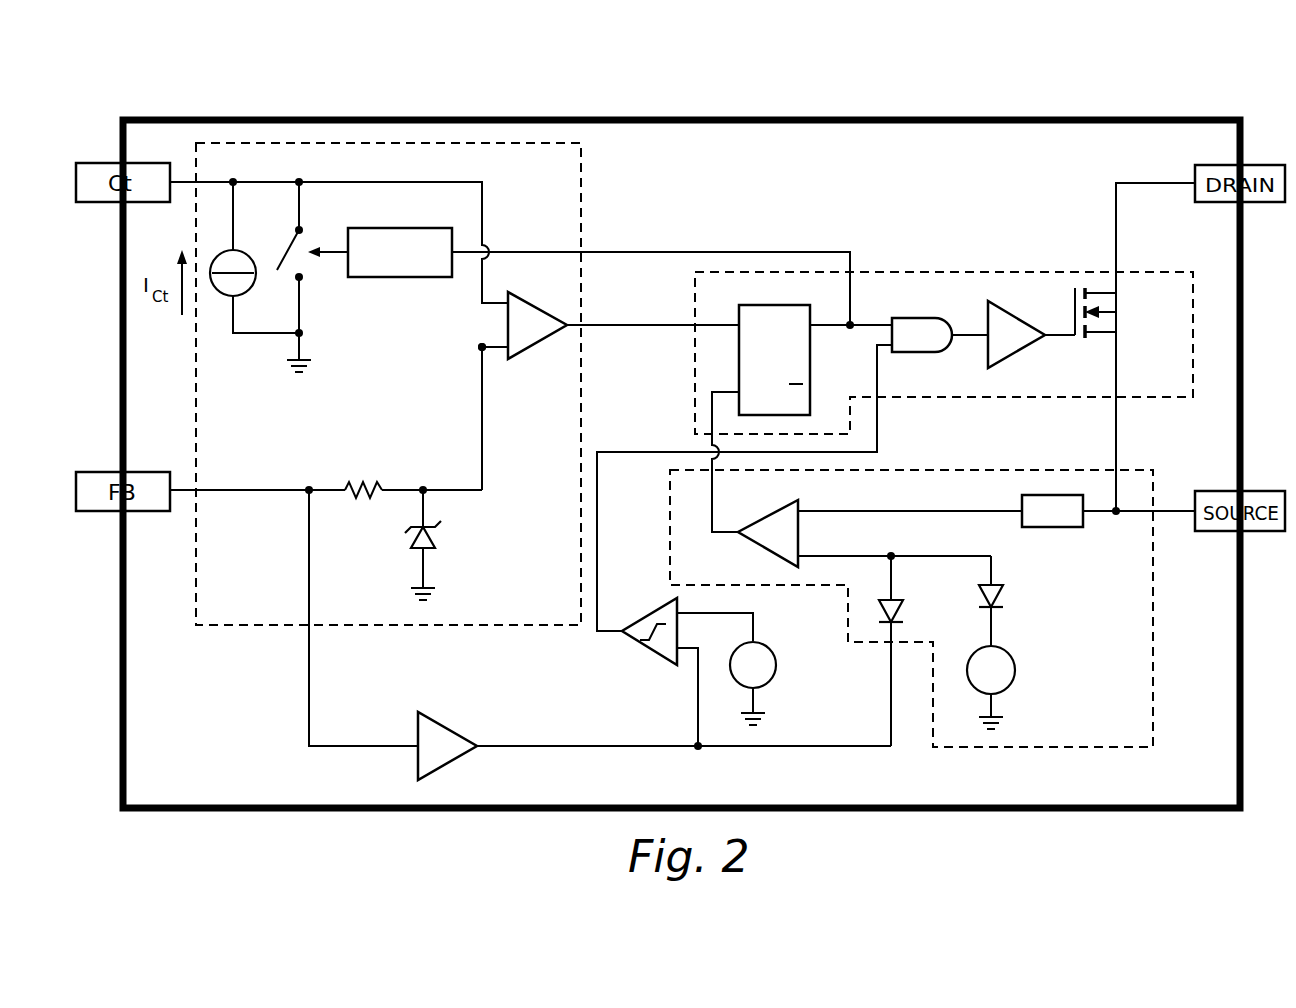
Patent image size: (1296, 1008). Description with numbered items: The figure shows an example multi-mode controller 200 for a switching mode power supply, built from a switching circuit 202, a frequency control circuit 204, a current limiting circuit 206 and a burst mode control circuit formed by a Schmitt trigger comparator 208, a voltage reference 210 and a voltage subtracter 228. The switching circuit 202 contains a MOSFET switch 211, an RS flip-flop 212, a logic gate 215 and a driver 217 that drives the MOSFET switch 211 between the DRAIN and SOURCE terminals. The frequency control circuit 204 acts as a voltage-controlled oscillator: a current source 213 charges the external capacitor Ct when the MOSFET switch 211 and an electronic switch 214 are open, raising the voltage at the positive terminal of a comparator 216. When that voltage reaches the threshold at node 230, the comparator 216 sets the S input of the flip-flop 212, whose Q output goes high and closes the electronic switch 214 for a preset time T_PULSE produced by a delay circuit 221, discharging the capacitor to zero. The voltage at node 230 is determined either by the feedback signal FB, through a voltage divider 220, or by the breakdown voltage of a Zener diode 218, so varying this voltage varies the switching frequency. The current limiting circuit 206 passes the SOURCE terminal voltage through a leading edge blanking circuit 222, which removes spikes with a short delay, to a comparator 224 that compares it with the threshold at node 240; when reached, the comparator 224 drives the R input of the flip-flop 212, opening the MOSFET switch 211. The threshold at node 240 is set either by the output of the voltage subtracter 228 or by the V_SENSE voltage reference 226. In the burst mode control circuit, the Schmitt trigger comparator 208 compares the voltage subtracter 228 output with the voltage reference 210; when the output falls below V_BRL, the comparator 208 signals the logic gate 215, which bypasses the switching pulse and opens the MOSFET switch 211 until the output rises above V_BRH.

The multi-mode controller 200 is at (940, 90).
The switching circuit 202 is at (940, 272).
The frequency control circuit 204 is at (581, 200).
The current limiting circuit 206 is at (945, 470).
The Schmitt trigger comparator 208 is at (650, 665).
The voltage reference 210 is at (770, 685).
The MOSFET switch 211 is at (1097, 337).
The RS flip-flop 212 is at (783, 305).
The current source 213 is at (252, 298).
The electronic switch 214 is at (303, 265).
The logic gate 215 is at (930, 318).
The comparator 216 is at (543, 343).
The driver 217 is at (1015, 357).
The Zener diode 218 is at (406, 533).
The voltage divider 220 is at (362, 479).
The delay circuit 221 is at (395, 228).
The leading edge blanking circuit 222 is at (1048, 527).
The comparator 224 is at (770, 548).
The voltage reference 226 is at (1010, 652).
The voltage subtracter 228 is at (445, 725).
The node 230 is at (482, 347).
The node 240 is at (895, 555).